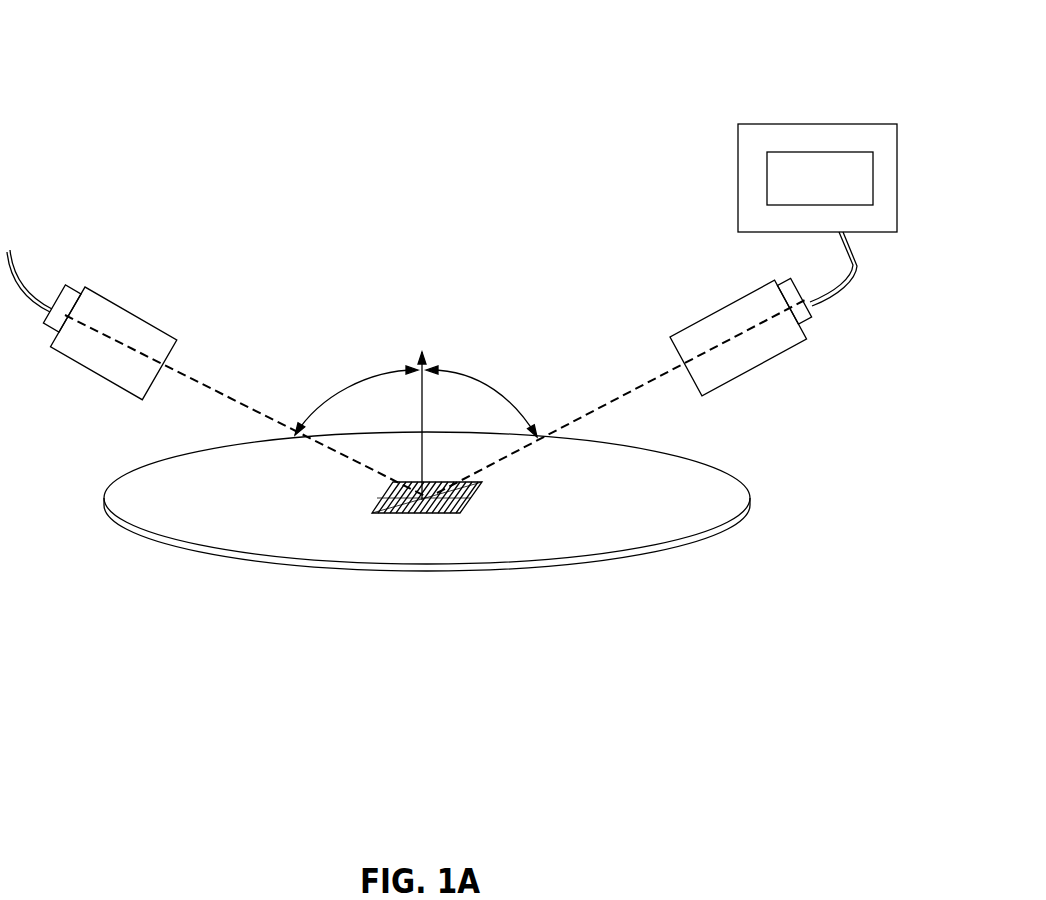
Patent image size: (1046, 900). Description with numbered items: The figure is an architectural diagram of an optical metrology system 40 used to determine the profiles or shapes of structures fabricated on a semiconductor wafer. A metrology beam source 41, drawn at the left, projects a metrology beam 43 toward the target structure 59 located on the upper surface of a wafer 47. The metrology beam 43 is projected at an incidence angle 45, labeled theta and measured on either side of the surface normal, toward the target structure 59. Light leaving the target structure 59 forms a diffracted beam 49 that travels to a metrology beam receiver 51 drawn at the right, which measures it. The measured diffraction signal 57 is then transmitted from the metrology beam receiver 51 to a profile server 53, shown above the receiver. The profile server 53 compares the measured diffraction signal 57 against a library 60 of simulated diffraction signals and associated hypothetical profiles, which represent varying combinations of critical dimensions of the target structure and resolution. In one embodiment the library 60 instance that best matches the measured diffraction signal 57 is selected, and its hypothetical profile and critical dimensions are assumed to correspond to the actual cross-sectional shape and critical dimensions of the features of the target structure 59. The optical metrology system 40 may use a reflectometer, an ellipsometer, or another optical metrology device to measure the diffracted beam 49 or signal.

The optical metrology system 40 is at (433, 100).
The metrology beam source 41 is at (145, 290).
The metrology beam 43 is at (217, 362).
The angle of incidence 45 is at (353, 333).
The wafer 47 is at (160, 458).
The diffracted beam 49 is at (620, 393).
The metrology beam receiver 51 is at (713, 382).
The profile server 53 is at (801, 137).
The diffraction signal 57 is at (833, 277).
The target structure 59 is at (413, 513).
The library 60 is at (820, 178).